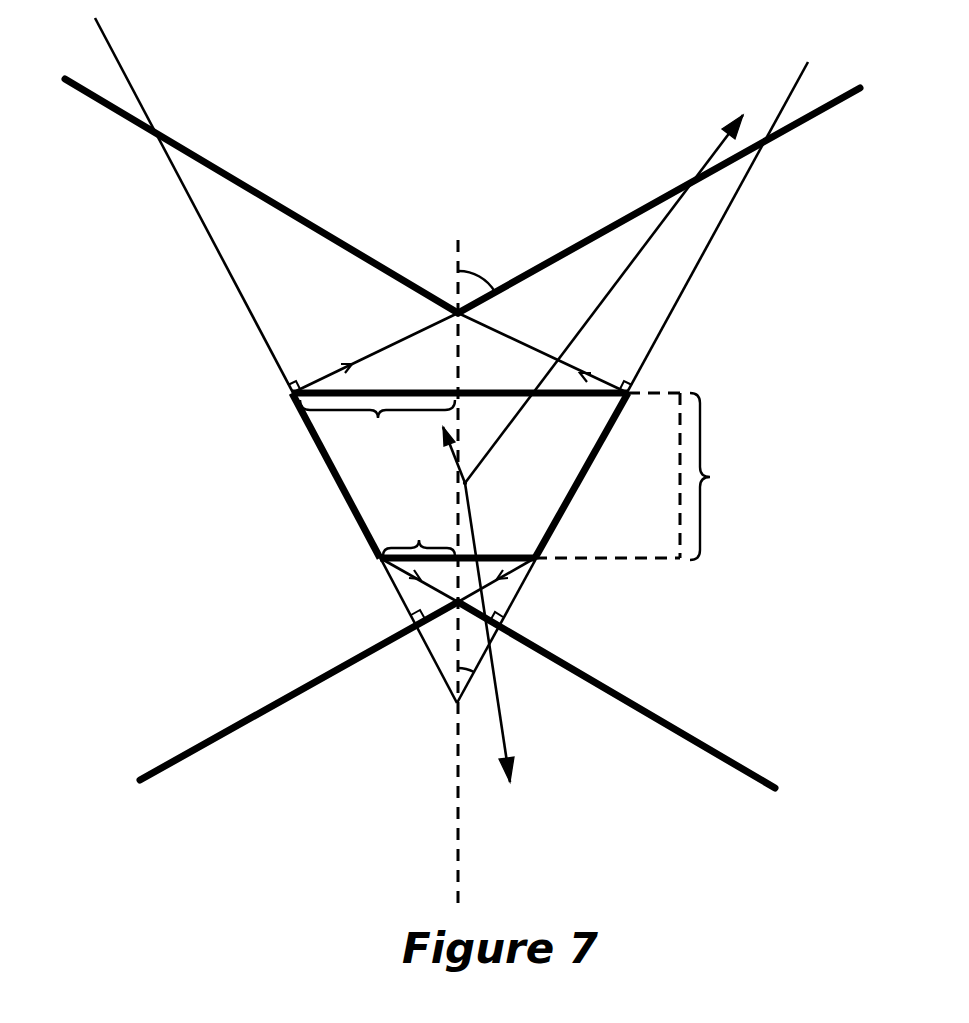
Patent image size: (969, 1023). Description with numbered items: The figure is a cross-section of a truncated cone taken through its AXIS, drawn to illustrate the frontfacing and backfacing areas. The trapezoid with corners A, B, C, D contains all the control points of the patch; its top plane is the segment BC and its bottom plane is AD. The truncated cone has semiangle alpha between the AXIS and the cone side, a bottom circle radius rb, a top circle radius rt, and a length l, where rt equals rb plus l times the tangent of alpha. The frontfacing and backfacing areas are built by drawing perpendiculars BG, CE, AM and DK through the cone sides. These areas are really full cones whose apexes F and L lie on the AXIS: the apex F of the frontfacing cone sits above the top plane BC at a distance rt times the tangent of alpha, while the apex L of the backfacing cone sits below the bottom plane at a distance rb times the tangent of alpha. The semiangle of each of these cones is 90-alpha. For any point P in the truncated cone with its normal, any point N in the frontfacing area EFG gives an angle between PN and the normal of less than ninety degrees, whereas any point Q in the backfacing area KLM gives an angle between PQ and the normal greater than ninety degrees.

The frontfacing area vertex E is at (248, 191).
The frontfacing area vertex G is at (671, 197).
The backfacing area vertex K is at (281, 691).
The backfacing area vertex M is at (630, 695).
The frontfacing cone apex F is at (460, 353).
The backfacing cone apex L is at (453, 609).
The top-left corner of truncated cone cross-section B is at (278, 393).
The top-right corner of truncated cone cross-section C is at (636, 391).
The bottom-left corner of truncated cone cross-section A is at (376, 563).
The bottom-right corner of truncated cone cross-section D is at (541, 564).
The point in frontfacing area N is at (577, 288).
The point in truncated cone P is at (475, 492).
The point in backfacing area Q is at (496, 650).
The cone axis AXIS is at (460, 877).
The top circle radius rt is at (377, 430).
The bottom circle radius rb is at (419, 537).
The truncated cone length l is at (634, 476).
The frontfacing/backfacing cone semiangle 90-alpha is at (491, 270).
The truncated cone semiangle alpha is at (465, 661).